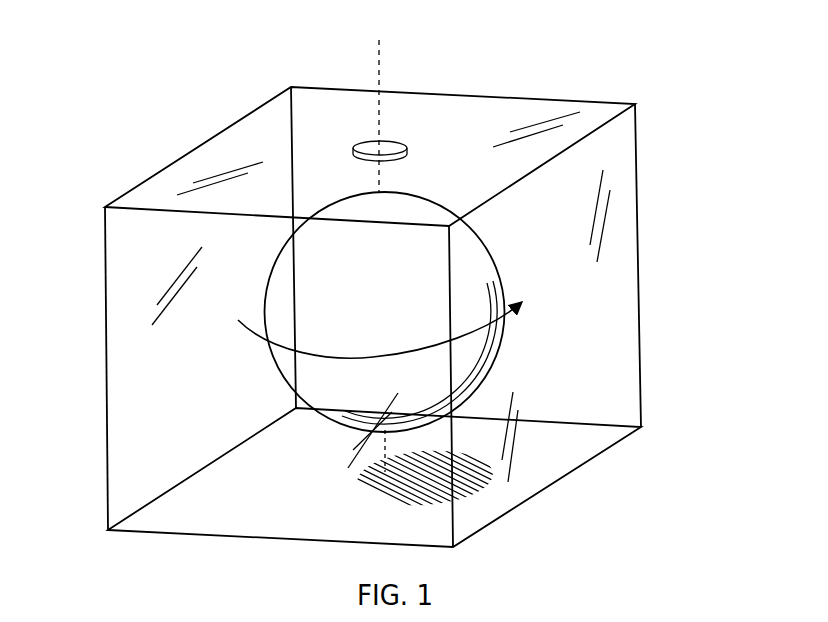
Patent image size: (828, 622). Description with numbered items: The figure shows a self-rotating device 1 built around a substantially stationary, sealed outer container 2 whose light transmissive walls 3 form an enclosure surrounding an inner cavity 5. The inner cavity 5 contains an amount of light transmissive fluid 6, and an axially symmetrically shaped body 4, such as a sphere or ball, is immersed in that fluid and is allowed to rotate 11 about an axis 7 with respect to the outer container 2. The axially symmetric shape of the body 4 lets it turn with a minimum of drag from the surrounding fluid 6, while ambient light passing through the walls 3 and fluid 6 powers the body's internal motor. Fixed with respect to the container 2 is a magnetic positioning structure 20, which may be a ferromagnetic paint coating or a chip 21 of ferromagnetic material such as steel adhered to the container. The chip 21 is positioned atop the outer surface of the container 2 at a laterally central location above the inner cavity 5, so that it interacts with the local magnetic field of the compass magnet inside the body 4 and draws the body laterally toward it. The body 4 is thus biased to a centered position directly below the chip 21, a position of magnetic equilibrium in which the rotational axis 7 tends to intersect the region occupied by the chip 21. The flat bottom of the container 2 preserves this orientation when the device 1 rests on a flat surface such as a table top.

The self-rotating device 1 is at (175, 98).
The outer container 2 is at (563, 100).
The light transmissive walls 3 is at (167, 187).
The axially symmetrically shaped body 4 is at (483, 252).
The inner cavity 5 is at (194, 506).
The light transmissive fluid 6 is at (168, 443).
The axis 7 is at (378, 115).
The rotation 11 is at (252, 343).
The magnetic positioning structure 20 is at (424, 152).
The chip 21 is at (395, 143).